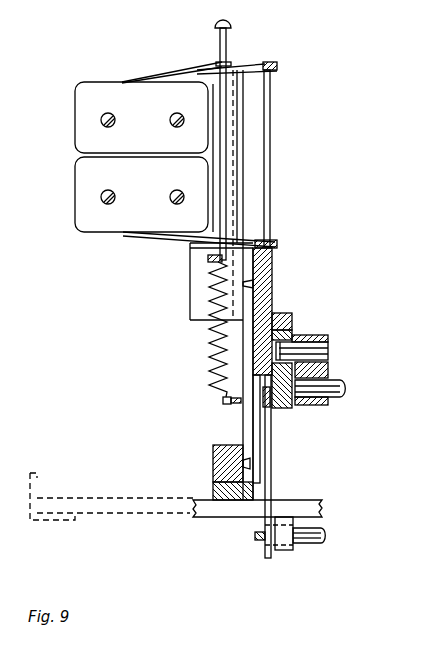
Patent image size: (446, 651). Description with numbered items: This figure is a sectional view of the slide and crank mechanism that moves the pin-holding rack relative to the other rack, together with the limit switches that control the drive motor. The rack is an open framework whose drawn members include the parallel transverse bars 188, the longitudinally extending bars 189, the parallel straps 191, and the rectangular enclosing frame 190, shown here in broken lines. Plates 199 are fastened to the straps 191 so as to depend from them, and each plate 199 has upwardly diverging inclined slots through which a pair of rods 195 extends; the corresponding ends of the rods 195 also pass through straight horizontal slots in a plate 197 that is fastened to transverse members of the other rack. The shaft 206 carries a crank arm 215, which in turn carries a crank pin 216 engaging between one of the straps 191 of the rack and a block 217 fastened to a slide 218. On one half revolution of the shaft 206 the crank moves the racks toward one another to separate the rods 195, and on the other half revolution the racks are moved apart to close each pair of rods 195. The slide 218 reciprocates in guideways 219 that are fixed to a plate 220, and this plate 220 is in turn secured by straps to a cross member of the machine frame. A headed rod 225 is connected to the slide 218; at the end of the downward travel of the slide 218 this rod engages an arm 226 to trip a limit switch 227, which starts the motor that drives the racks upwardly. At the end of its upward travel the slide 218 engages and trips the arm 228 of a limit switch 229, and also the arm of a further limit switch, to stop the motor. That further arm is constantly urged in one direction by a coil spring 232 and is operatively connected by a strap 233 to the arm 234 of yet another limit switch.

The headed rod 225 is at (226, 44).
The arm 226 is at (183, 67).
The limit switch 227 is at (157, 105).
The limit switch 229 is at (157, 178).
The arm 234 is at (247, 68).
The strap 233 is at (268, 155).
The arm 228 is at (185, 243).
The coil spring 232 is at (218, 355).
The slide 218 is at (266, 265).
The block 217 is at (278, 313).
The crank pin 216 is at (303, 345).
The crank arm 215 is at (328, 370).
The shaft 206 is at (333, 400).
The straps 191 is at (280, 410).
The plate 220 is at (247, 425).
The guideways 219 is at (257, 405).
The plates 199 is at (268, 467).
The longitudinally extending bars 189 is at (213, 493).
The transverse bars 188 is at (290, 503).
The rectangular enclosing frame 190 is at (35, 473).
The plate 197 is at (282, 550).
The rods 195 is at (313, 543).